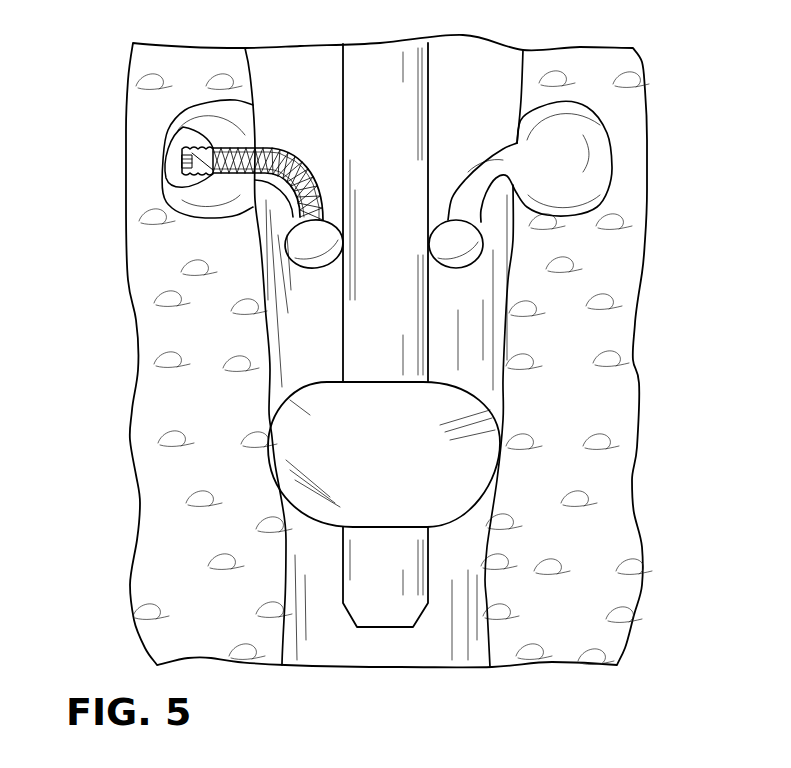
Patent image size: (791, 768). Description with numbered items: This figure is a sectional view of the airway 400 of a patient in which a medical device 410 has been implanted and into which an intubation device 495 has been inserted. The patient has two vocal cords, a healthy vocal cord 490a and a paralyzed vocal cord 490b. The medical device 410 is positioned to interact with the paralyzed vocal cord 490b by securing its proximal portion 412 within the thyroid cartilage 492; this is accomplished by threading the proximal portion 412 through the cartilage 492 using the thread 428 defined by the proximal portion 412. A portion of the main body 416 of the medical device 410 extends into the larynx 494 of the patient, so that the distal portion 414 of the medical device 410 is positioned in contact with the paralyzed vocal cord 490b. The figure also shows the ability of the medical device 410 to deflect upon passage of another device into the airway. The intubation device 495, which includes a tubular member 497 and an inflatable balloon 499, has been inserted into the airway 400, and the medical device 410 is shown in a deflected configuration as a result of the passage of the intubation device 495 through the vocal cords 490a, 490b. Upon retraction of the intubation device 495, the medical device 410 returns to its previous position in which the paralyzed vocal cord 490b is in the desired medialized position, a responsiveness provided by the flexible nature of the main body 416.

The airway 400 is at (626, 224).
The medical device 410 is at (282, 150).
The proximal portion 412 is at (183, 127).
The distal portion 414 is at (288, 223).
The main body 416 is at (305, 218).
The thread 428 is at (165, 182).
The healthy vocal cord 490a is at (483, 244).
The paralyzed vocal cord 490b is at (297, 266).
The thyroid cartilage 492 is at (187, 102).
The larynx 494 is at (312, 333).
The intubation device 495 is at (442, 541).
The tubular member 497 is at (430, 347).
The inflatable balloon 499 is at (503, 420).